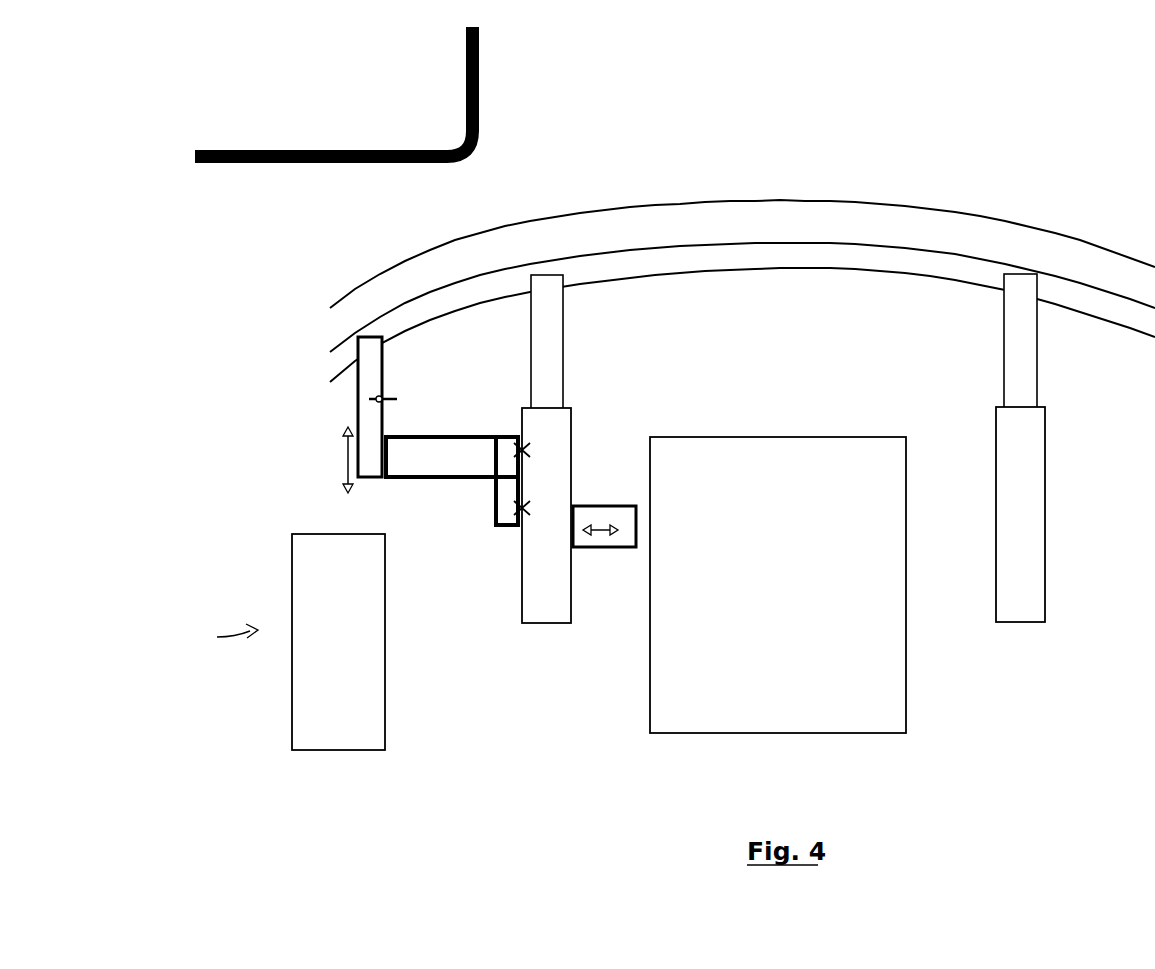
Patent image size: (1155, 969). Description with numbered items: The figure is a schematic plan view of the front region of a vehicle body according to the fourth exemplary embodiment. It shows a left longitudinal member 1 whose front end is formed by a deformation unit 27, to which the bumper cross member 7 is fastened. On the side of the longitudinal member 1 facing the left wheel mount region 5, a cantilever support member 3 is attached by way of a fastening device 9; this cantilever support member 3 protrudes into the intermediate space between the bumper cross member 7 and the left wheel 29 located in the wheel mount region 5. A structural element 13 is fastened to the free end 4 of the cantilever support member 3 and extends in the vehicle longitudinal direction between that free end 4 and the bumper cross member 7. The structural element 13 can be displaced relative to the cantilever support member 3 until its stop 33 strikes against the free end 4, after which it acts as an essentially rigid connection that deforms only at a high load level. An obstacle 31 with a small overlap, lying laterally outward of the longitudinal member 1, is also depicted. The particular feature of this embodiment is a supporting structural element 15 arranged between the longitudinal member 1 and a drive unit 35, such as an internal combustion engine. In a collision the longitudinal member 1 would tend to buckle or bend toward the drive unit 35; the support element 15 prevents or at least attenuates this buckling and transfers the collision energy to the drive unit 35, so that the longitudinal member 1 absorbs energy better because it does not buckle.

The left longitudinal member 1 is at (558, 438).
The cantilever support member 3 is at (466, 437).
The free end 4 is at (364, 482).
The wheel mount region 5 is at (225, 637).
The bumper cross member 7 is at (755, 203).
The fastening device 9 is at (512, 522).
The structural element 13 is at (355, 404).
The supporting structural element 15 is at (617, 524).
The deformation unit 27 is at (547, 325).
The wheel 29 is at (297, 594).
The obstacle 31 is at (350, 150).
The stop 33 is at (384, 395).
The drive unit 35 is at (767, 455).